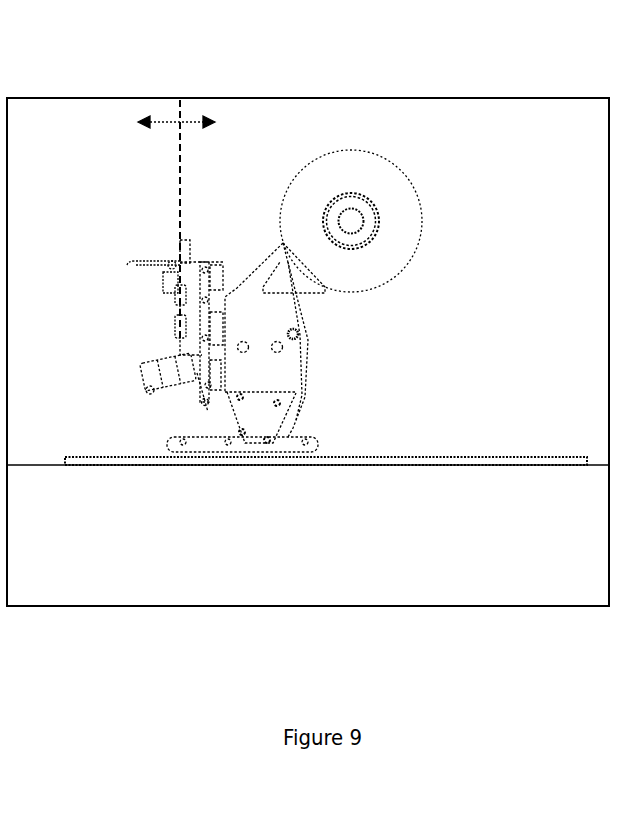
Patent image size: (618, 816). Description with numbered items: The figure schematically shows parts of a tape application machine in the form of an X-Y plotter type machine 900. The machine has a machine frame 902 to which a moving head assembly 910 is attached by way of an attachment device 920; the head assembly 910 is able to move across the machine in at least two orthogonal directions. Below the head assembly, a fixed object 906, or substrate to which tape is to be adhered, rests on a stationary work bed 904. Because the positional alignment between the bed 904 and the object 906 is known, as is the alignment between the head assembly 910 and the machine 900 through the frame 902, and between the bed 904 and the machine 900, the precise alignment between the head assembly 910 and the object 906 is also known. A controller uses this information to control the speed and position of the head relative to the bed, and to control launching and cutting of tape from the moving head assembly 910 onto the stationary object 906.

The X-Y plotter type machine 900 is at (495, 98).
The machine frame 902 is at (182, 207).
The stationary work bed 904 is at (55, 465).
The fixed object 906 is at (375, 457).
The moving head assembly 910 is at (470, 195).
The attachment device 920 is at (128, 279).